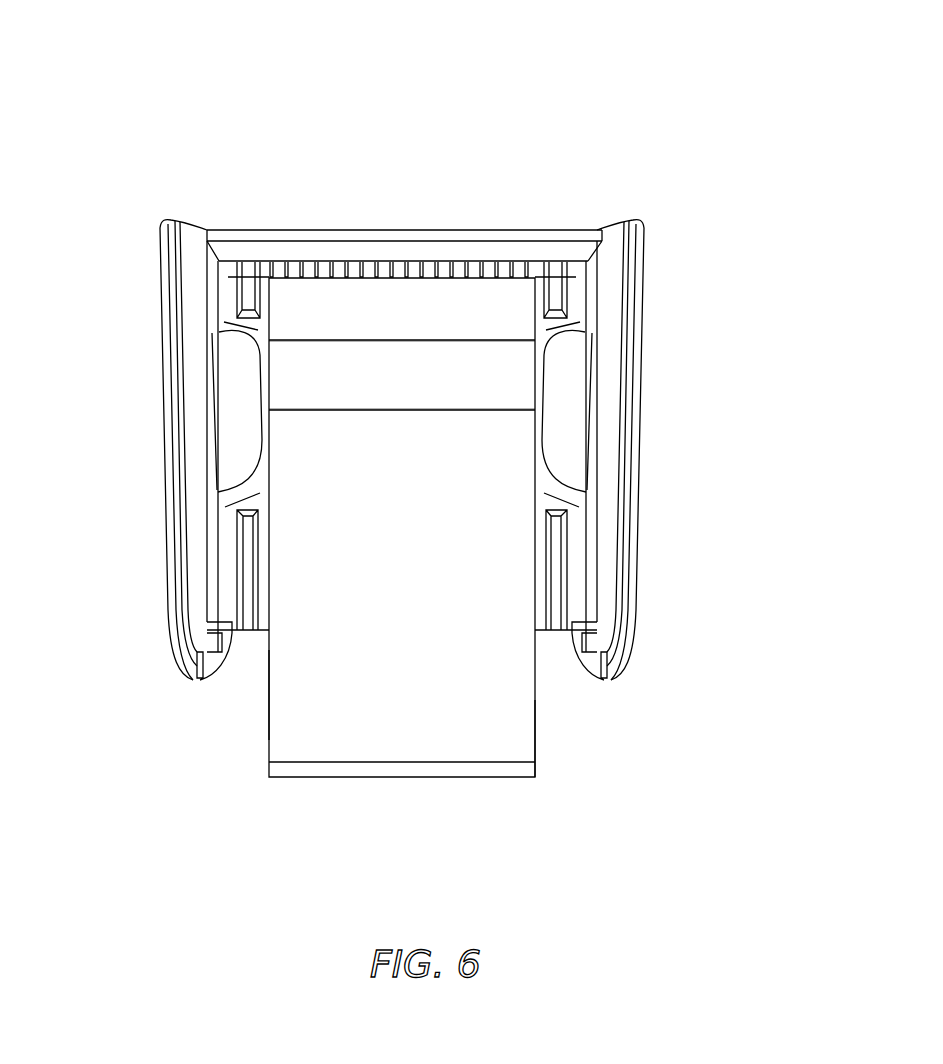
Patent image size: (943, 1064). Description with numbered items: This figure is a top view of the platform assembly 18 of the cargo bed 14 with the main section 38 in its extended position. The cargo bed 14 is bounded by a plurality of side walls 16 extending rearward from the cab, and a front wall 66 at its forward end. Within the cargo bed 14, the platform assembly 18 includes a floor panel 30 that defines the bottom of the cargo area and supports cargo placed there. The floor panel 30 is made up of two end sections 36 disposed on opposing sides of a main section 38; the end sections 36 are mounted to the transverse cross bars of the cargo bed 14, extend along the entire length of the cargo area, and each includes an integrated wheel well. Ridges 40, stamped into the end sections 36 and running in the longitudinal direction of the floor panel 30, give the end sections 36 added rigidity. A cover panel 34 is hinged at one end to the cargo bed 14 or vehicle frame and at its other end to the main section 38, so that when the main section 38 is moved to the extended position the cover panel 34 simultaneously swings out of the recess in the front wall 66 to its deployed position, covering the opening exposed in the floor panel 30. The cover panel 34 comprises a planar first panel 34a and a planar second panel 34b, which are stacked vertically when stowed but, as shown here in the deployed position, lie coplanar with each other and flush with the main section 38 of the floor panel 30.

The cargo bed 14 is at (676, 488).
The side walls 16 is at (171, 361).
The platform assembly 18 is at (397, 796).
The floor panel 30 is at (536, 729).
The cover panel 34 is at (425, 275).
The first panel 34a is at (326, 305).
The second panel 34b is at (490, 372).
The end sections 36 is at (246, 615).
The main section 38 is at (287, 697).
The ridges 40 is at (232, 551).
The front wall 66 is at (490, 241).